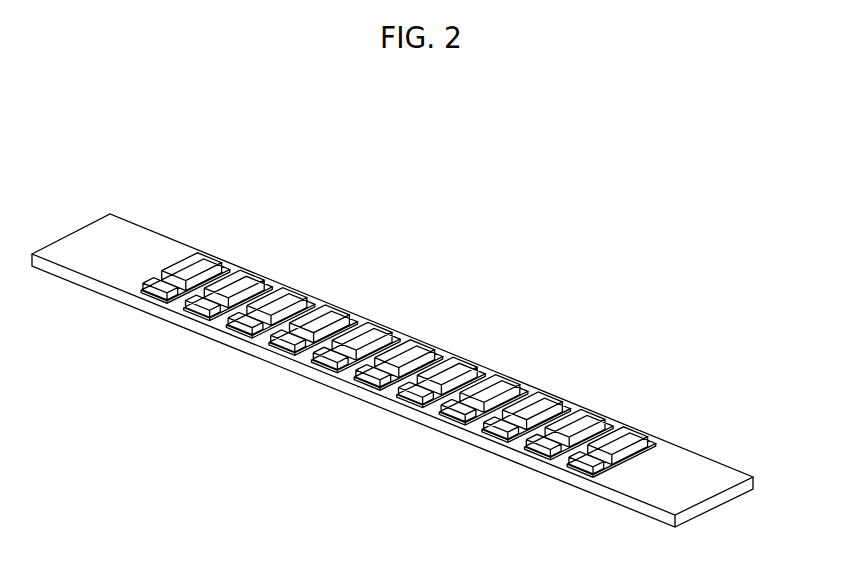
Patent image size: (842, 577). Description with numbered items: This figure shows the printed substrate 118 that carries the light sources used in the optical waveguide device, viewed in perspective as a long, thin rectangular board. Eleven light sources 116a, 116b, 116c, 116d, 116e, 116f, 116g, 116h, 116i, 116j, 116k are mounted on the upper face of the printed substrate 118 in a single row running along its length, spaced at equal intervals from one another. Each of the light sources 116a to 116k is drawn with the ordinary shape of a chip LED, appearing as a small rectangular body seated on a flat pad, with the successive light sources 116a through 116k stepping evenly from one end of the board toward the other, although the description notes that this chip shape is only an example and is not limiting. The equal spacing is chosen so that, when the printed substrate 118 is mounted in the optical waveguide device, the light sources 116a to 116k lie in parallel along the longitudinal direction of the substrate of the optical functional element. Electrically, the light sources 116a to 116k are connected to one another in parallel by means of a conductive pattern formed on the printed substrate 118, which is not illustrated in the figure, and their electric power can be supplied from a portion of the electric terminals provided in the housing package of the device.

The light source 116a is at (186, 266).
The light source 116b is at (233, 282).
The light source 116c is at (272, 302).
The light source 116d is at (315, 322).
The light source 116e is at (352, 332).
The light source 116f is at (395, 348).
The light source 116g is at (438, 368).
The light source 116h is at (480, 388).
The light source 116i is at (521, 408).
The light source 116j is at (563, 425).
The light source 116k is at (606, 440).
The printed substrate 118 is at (710, 473).